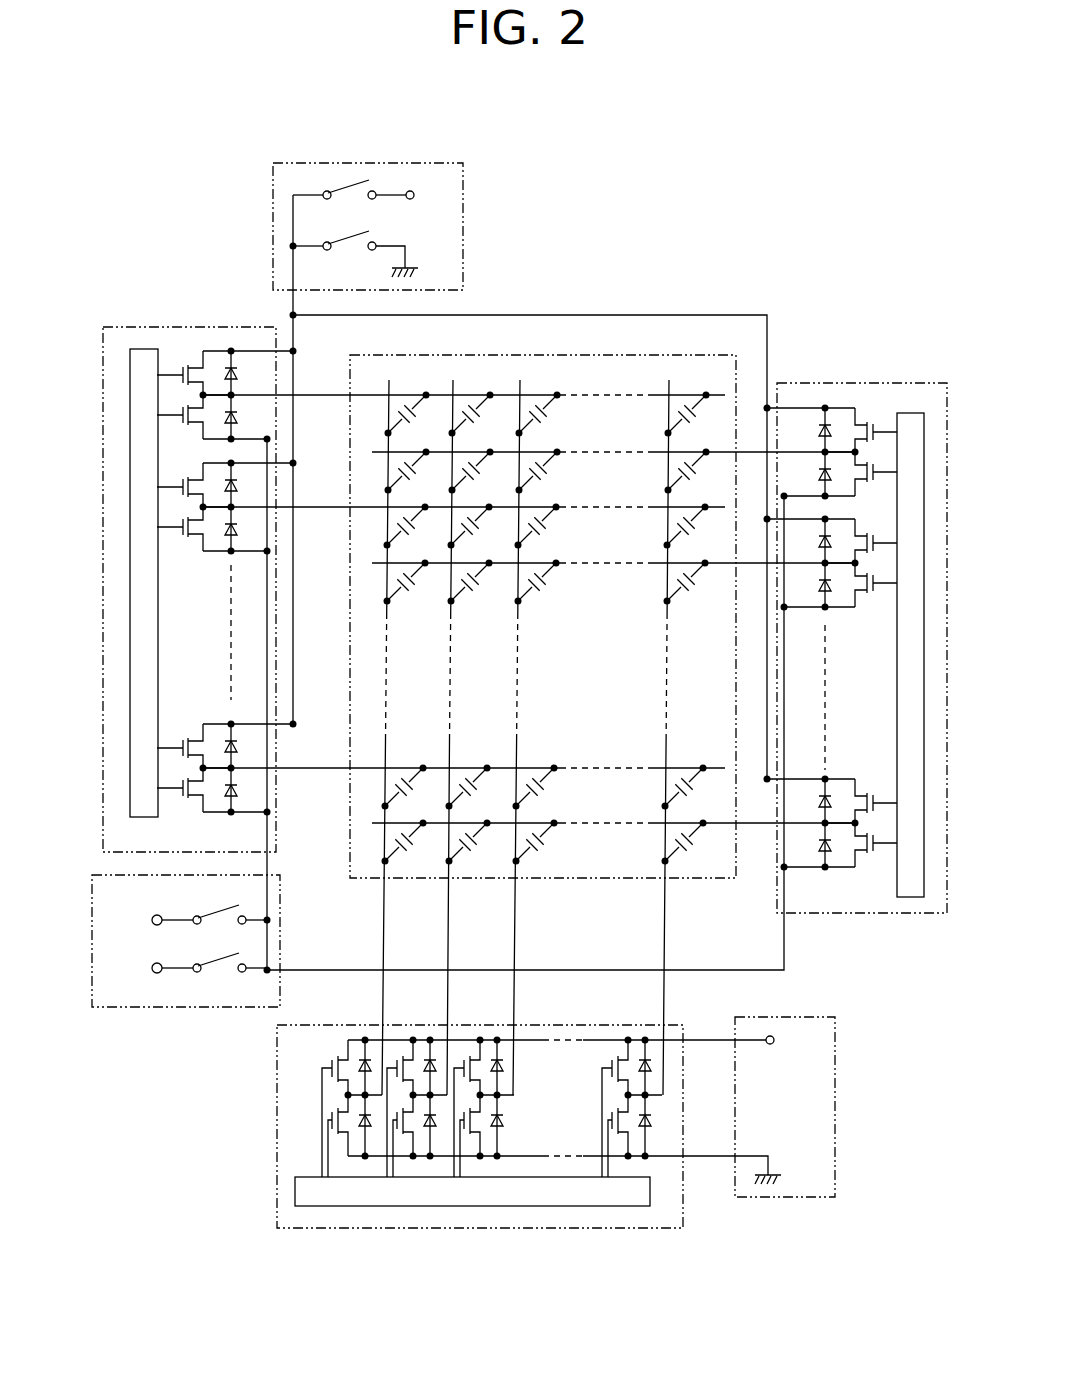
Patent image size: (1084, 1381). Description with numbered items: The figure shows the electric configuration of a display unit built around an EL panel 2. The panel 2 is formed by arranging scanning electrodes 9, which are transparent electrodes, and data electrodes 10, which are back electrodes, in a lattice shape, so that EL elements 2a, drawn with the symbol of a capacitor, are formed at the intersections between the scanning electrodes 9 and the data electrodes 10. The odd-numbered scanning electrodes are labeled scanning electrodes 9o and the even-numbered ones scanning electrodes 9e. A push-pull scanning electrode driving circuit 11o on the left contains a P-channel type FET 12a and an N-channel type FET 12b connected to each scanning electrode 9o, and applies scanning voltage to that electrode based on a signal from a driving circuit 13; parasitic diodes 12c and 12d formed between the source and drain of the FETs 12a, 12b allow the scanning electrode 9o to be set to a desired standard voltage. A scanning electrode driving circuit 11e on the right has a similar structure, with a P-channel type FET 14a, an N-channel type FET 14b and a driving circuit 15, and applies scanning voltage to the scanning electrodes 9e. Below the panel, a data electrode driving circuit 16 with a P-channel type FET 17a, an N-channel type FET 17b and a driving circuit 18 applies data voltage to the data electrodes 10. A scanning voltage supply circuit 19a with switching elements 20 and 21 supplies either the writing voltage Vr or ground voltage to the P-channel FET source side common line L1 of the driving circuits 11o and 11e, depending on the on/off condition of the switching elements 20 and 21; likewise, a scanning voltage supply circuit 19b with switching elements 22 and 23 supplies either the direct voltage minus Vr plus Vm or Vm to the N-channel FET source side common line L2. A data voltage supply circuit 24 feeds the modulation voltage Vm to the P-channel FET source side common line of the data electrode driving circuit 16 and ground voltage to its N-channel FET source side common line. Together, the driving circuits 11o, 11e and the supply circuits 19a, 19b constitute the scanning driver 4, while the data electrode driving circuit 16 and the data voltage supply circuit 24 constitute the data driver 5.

The EL panel 2 is at (543, 661).
The EL element 2a is at (547, 593).
The scanning driver 4 is at (252, 232).
The data driver 5 is at (717, 1222).
The scanning electrodes 9 is at (529, 592).
The odd number order scanning electrodes 9o is at (320, 393).
The even number order scanning electrodes 9e is at (755, 450).
The data electrodes 10 is at (382, 1003).
The scanning electrode driving circuit 11o is at (104, 590).
The scanning electrode driving circuit 11e is at (948, 580).
The P-channel type FET 12a is at (227, 340).
The N-channel type FET 12b is at (192, 440).
The parasitic diode 12c is at (238, 374).
The parasitic diode 12d is at (238, 418).
The driving circuit 13 is at (159, 616).
The P-channel type FET 14a is at (860, 420).
The N-channel type FET 14b is at (862, 488).
The driving circuit 15 is at (897, 680).
The data electrode driving circuit 16 is at (545, 1230).
The P-channel type FET 17a is at (344, 1052).
The N-channel type FET 17b is at (344, 1134).
The driving circuit 18 is at (443, 1207).
The scanning voltage supply circuit 19a is at (416, 163).
The scanning voltage supply circuit 19b is at (135, 1010).
The switching element 20 is at (350, 182).
The switching element 21 is at (358, 238).
The switching element 22 is at (213, 913).
The switching element 23 is at (217, 962).
The data voltage supply circuit 24 is at (837, 1107).
The P-channel FET source side common line L1 is at (614, 315).
The N-channel FET source side common line L2 is at (321, 968).